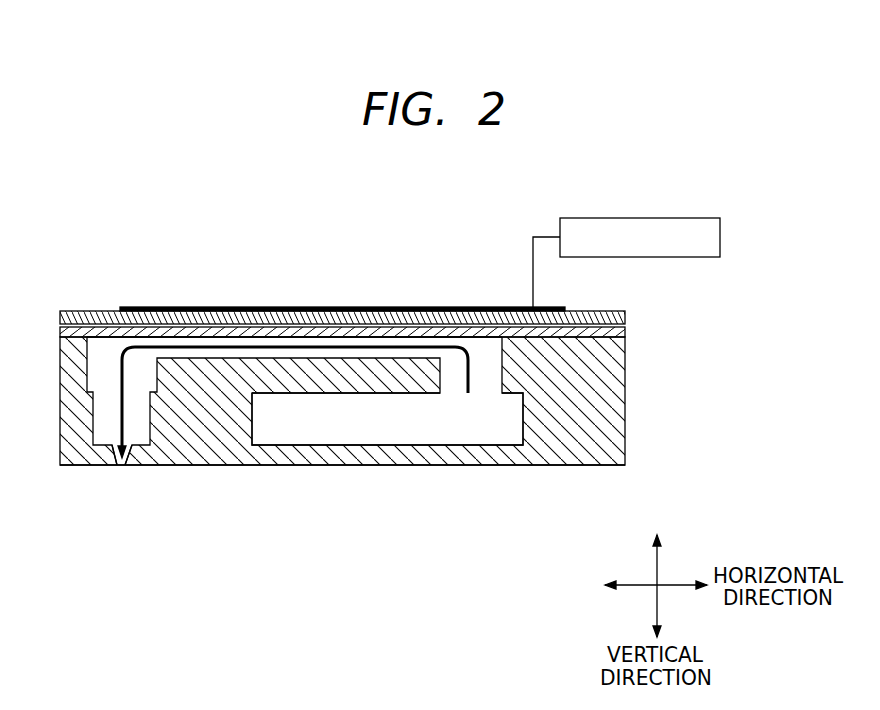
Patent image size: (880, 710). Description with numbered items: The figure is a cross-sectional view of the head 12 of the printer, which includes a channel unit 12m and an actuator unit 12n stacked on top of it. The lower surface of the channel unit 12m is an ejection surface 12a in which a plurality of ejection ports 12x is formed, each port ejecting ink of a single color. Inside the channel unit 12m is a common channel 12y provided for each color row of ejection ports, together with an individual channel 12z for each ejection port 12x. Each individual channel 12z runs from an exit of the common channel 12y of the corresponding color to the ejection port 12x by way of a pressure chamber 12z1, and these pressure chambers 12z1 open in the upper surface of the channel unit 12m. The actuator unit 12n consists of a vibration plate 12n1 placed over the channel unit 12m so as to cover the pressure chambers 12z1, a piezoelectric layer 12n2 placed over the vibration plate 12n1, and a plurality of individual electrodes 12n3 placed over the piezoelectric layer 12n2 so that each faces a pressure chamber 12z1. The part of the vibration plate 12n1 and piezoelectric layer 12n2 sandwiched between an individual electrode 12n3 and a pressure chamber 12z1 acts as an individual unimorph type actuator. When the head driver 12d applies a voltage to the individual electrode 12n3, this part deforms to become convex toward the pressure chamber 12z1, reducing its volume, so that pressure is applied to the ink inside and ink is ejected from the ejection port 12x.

The head 12 is at (783, 302).
The channel unit 12m is at (625, 398).
The actuator unit 12n is at (725, 264).
The vibration plate 12n1 is at (624, 331).
The piezoelectric layer 12n2 is at (625, 317).
The individual electrode 12n3 is at (548, 310).
The head driver 12d is at (680, 216).
The pressure chamber 12z1 is at (342, 338).
The individual channel 12z is at (298, 349).
The common channel 12y is at (388, 423).
The ejection port 12x is at (113, 464).
The ejection surface 12a is at (550, 466).